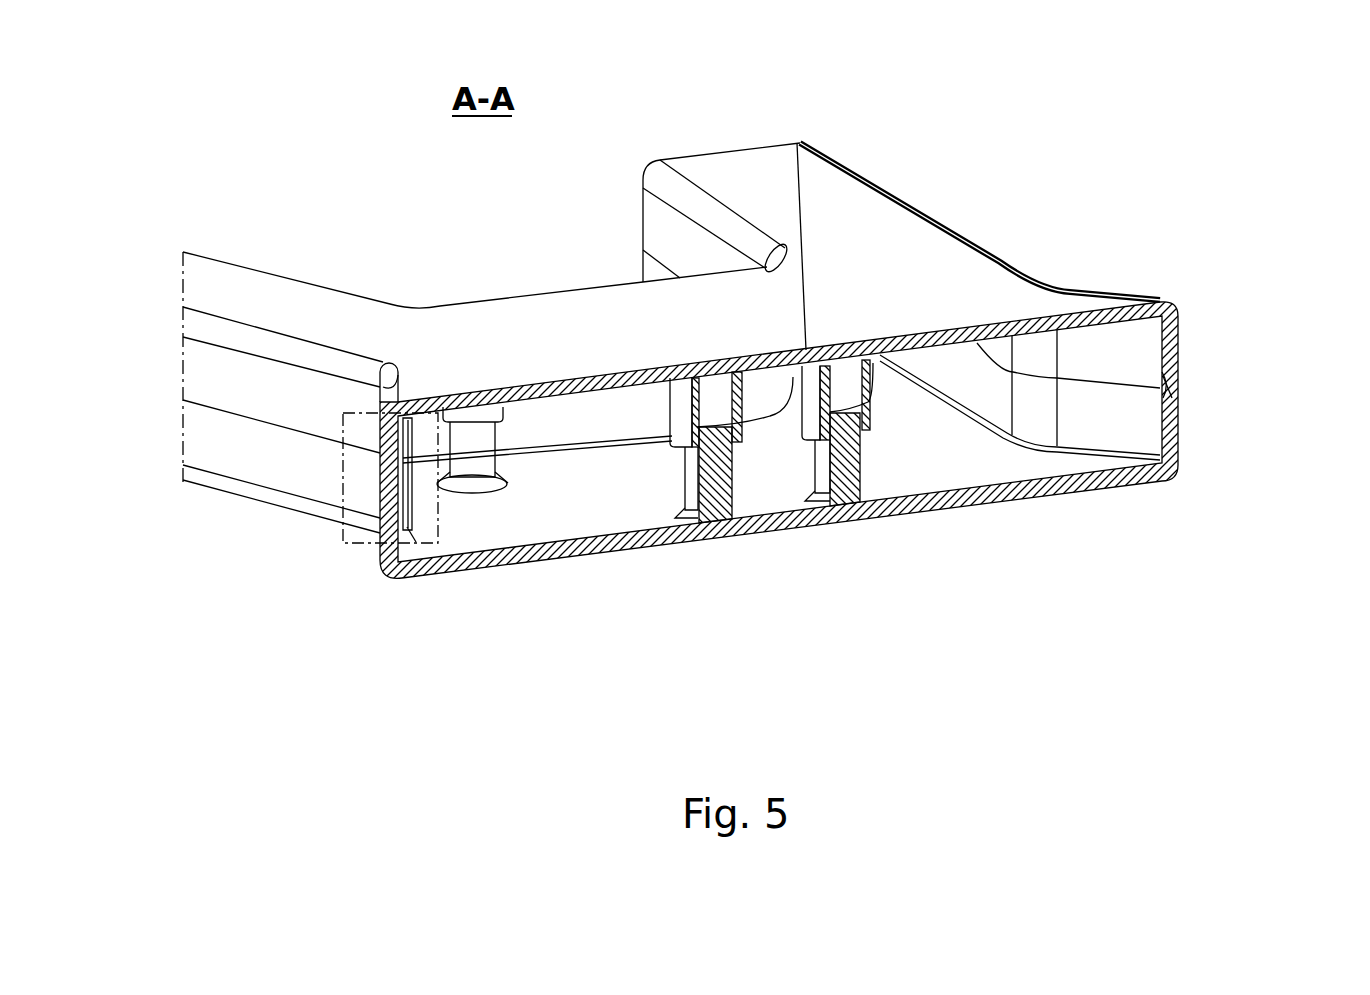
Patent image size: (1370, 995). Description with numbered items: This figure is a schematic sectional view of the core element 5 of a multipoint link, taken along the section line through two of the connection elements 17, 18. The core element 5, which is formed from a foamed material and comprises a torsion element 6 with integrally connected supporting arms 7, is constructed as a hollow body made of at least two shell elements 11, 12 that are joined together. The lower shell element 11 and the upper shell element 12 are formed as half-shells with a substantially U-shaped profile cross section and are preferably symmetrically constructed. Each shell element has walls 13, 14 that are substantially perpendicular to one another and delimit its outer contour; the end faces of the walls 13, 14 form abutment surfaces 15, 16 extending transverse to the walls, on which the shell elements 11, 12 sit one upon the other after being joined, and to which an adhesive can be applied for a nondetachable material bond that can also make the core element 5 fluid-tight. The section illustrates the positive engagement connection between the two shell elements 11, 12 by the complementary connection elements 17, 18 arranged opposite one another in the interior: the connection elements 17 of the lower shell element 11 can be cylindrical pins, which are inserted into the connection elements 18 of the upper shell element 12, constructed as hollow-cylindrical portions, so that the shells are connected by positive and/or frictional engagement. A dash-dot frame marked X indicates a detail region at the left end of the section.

The core element 5 is at (865, 238).
The torsion element 6 is at (990, 252).
The supporting arm 7 is at (843, 165).
The lower shell element 11 is at (268, 502).
The upper shell element 12 is at (286, 277).
The wall 13 is at (1113, 432).
The wall 14 is at (1133, 352).
The abutment surface 15 is at (1175, 400).
The abutment surface 16 is at (1170, 380).
The connection element 17 is at (473, 458).
The connection element 18 is at (815, 387).
The detail X is at (375, 543).